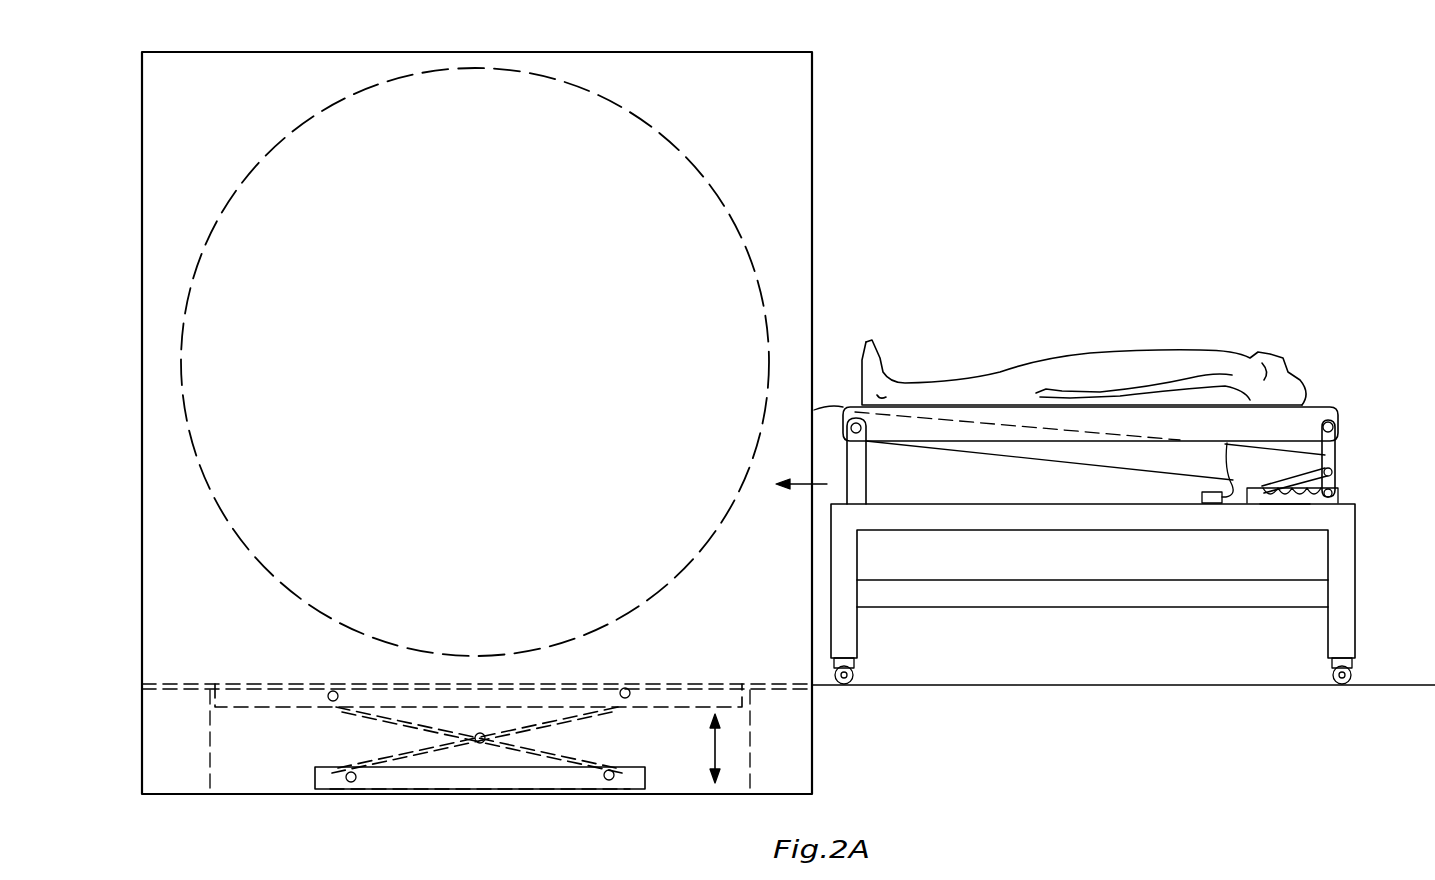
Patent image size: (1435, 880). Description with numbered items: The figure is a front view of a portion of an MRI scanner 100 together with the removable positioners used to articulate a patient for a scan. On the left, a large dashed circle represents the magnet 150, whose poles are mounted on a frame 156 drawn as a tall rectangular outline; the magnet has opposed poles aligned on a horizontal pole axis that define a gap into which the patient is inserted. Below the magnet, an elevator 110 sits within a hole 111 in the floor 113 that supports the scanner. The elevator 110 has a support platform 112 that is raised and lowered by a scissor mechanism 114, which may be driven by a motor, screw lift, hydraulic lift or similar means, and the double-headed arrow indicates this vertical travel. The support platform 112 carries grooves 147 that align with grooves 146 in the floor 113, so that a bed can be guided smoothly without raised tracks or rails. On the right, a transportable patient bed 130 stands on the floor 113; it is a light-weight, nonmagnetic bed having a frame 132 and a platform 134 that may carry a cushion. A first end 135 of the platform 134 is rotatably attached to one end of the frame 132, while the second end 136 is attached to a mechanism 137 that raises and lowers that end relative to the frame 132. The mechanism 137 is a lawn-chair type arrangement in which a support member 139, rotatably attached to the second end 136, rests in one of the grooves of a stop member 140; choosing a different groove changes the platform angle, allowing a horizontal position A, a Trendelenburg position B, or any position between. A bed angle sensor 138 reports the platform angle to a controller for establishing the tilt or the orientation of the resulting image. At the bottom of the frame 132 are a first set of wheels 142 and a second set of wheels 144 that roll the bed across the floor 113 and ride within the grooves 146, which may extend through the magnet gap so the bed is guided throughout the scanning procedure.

The MRI scanner 100 is at (884, 121).
The elevator 110 is at (499, 775).
The hole 111 is at (232, 742).
The support platform 112 is at (716, 697).
The floor 113 is at (1088, 685).
The scissor mechanism 114 is at (448, 760).
The transportable patient bed 130 is at (1338, 362).
The frame 132 is at (858, 483).
The platform 134 is at (1318, 408).
The first end 135 is at (809, 412).
The second end 136 is at (1338, 414).
The mechanism 137 is at (1343, 492).
The bed angle sensor 138 is at (1212, 494).
The support member 139 is at (1308, 453).
The stop member 140 is at (1283, 505).
The first set of wheels 142 is at (862, 680).
The second set of wheels 144 is at (1326, 680).
The grooves 146 is at (163, 684).
The grooves 147 is at (250, 684).
The magnet 150 is at (686, 174).
The frame 156 is at (795, 90).
The horizontal position A is at (1340, 427).
The Trendelenburg position B is at (1340, 472).